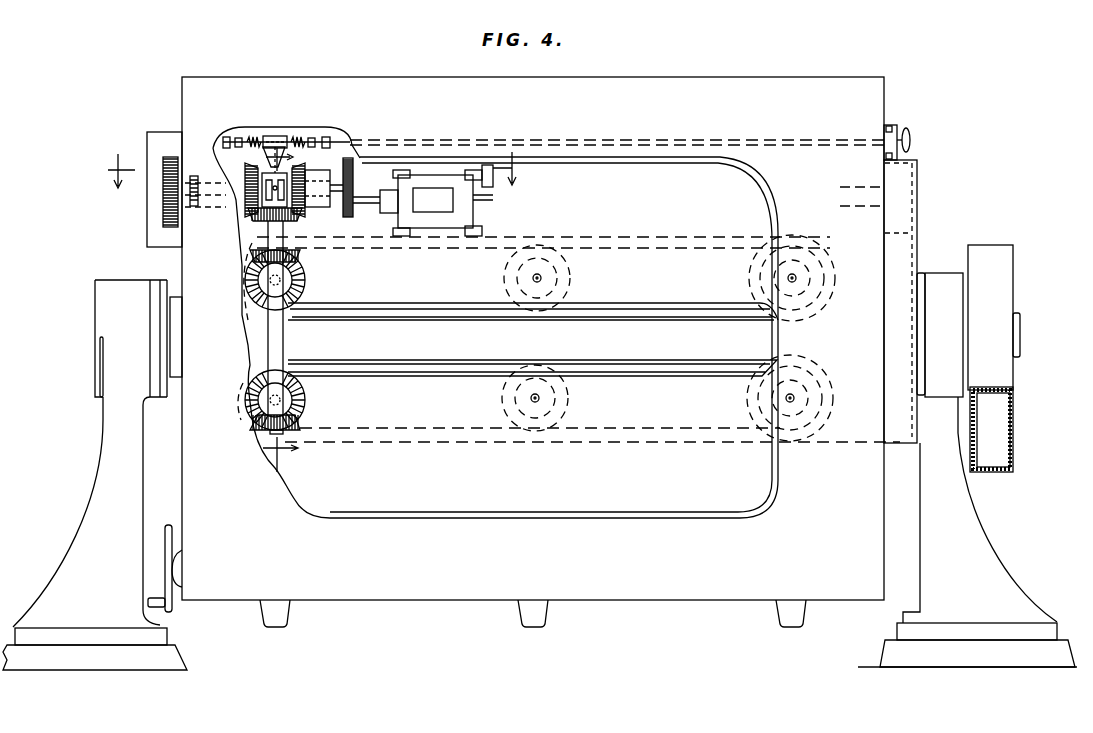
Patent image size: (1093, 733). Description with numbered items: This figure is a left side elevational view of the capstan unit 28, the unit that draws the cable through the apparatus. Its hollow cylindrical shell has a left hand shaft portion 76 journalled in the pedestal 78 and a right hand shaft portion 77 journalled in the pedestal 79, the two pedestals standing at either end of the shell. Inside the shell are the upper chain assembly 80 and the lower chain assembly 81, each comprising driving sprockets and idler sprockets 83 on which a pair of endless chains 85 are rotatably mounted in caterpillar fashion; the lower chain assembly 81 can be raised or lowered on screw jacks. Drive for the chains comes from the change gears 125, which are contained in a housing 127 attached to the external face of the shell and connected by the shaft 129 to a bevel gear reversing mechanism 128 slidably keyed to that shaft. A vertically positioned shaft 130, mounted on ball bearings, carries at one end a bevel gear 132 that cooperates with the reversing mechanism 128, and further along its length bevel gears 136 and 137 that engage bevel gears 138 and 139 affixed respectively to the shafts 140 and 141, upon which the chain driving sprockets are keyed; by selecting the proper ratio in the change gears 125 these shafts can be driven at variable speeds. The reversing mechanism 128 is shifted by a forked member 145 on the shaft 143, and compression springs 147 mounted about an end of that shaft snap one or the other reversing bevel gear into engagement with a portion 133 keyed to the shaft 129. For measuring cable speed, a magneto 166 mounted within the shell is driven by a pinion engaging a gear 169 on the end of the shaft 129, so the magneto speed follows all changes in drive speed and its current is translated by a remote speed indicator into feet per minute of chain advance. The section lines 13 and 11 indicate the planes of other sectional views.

The capstan unit 28 is at (289, 74).
The housing 127 is at (152, 136).
The section line 13 is at (315, 171).
The change gears 125 is at (163, 216).
The shaft 129 is at (228, 178).
The portion keyed to the shaft 133 is at (262, 203).
The compression springs 147 is at (252, 134).
The forked member 145 is at (297, 140).
The bevel gear reversing mechanism 128 is at (310, 163).
The gear 169 is at (352, 168).
The magneto 166 is at (490, 213).
The shaft 143 is at (703, 141).
The bevel gear 132 is at (291, 220).
The bevel gear 136 is at (298, 253).
The bevel gear 138 is at (305, 287).
The shaft 140 is at (245, 290).
The vertically positioned shaft 130 is at (268, 354).
The bevel gear 139 is at (305, 400).
The bevel gear 137 is at (303, 426).
The shaft 141 is at (245, 420).
The section line 11 is at (275, 456).
The upper chain assembly 80 is at (466, 240).
The lower chain assembly 81 is at (443, 433).
The idler sprockets 83 is at (765, 275).
The endless chains 85 is at (687, 358).
The right hand shaft portion 77 is at (105, 318).
The pedestal 79 is at (100, 491).
The left hand shaft portion 76 is at (1008, 288).
The pedestal 78 is at (992, 560).